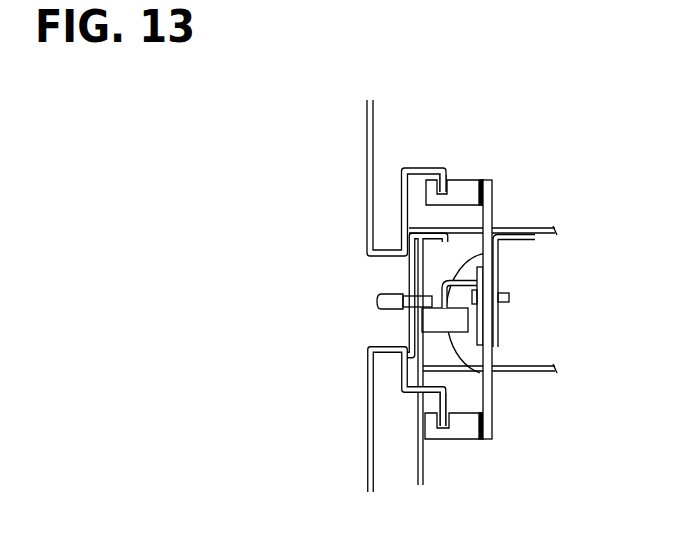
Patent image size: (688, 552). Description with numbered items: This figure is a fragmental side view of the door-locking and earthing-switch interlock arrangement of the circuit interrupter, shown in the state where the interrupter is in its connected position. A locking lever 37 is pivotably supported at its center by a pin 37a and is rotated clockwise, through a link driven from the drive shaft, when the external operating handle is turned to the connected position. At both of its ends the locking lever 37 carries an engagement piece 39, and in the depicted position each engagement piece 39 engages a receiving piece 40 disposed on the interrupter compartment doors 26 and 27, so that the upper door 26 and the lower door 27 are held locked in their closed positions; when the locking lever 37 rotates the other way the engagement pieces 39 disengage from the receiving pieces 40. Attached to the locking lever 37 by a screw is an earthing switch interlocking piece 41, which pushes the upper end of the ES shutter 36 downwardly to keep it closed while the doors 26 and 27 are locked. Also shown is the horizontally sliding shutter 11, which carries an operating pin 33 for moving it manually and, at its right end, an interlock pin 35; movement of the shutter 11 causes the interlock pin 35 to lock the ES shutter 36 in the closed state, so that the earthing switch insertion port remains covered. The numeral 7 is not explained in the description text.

The mounting structure 7 is at (492, 180).
The shutter 11 is at (408, 320).
The interrupter compartment door 26 is at (367, 162).
The interrupter compartment door 27 is at (368, 413).
The operating pin 33 is at (377, 302).
The interlock pin 35 is at (425, 293).
The ES shutter 36 is at (480, 372).
The locking lever 37 is at (494, 200).
The pin 37a is at (510, 298).
The engagement piece 39 is at (473, 179).
The receiving piece 40 is at (423, 166).
The earthing switch interlocking piece 41 is at (486, 256).